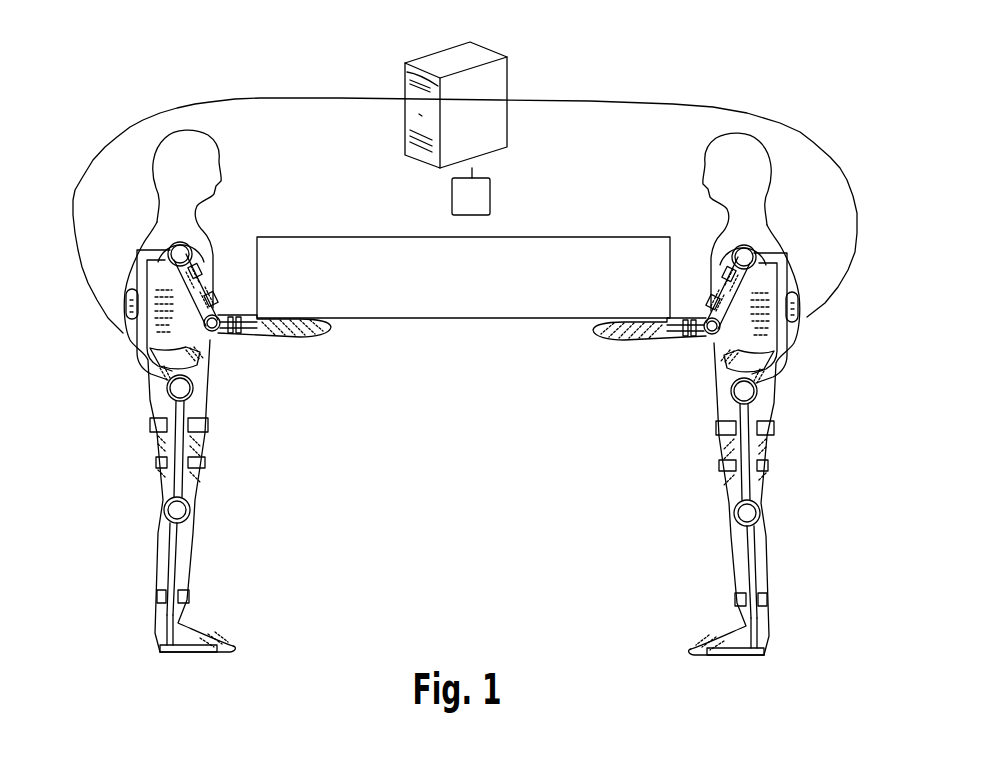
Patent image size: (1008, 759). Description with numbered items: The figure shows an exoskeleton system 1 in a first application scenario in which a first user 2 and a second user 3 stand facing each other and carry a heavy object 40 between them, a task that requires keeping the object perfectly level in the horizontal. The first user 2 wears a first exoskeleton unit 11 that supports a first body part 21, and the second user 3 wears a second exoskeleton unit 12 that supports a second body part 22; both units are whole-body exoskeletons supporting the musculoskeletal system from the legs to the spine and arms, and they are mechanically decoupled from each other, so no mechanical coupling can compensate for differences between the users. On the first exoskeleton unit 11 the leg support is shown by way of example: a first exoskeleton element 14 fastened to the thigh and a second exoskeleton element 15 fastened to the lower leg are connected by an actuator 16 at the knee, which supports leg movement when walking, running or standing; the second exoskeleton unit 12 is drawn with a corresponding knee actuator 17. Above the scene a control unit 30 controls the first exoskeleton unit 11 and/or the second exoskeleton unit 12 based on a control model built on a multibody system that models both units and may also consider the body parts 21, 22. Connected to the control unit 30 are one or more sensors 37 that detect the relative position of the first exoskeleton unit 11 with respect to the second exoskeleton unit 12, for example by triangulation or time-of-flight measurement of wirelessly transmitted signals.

The exoskeleton system 1 is at (720, 90).
The first user 2 is at (187, 362).
The second user 3 is at (738, 362).
The first exoskeleton unit 11 is at (143, 347).
The second exoskeleton unit 12 is at (781, 344).
The first exoskeleton element 14 is at (157, 442).
The second exoskeleton element 15 is at (177, 553).
The actuator 16 is at (173, 503).
The knee joint actuator of second device 17 is at (758, 510).
The first body part 21 is at (157, 278).
The second body part 22 is at (767, 281).
The control unit 30 is at (506, 84).
The sensors 37 is at (492, 192).
The heavy object 40 is at (632, 236).